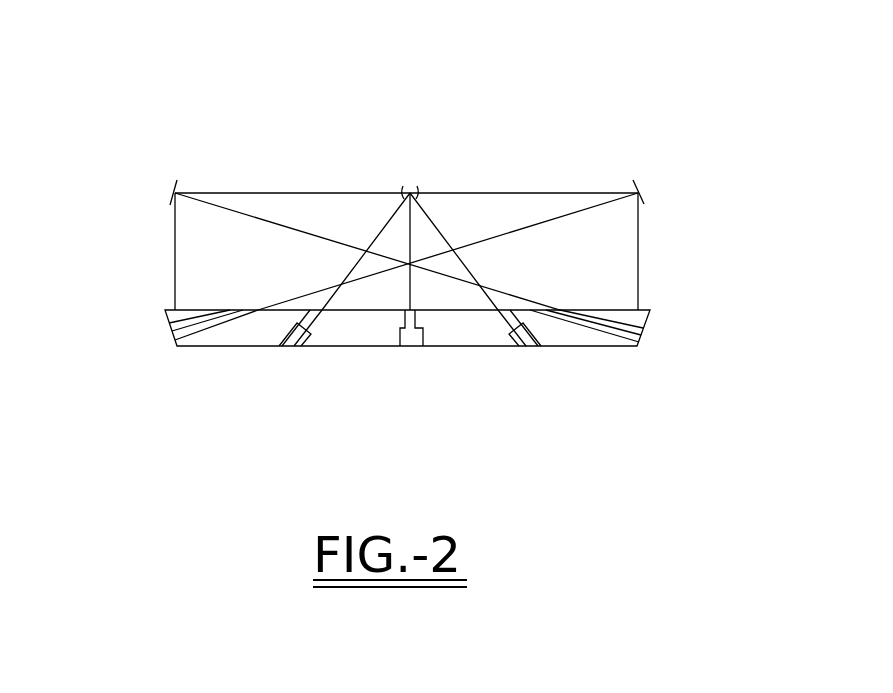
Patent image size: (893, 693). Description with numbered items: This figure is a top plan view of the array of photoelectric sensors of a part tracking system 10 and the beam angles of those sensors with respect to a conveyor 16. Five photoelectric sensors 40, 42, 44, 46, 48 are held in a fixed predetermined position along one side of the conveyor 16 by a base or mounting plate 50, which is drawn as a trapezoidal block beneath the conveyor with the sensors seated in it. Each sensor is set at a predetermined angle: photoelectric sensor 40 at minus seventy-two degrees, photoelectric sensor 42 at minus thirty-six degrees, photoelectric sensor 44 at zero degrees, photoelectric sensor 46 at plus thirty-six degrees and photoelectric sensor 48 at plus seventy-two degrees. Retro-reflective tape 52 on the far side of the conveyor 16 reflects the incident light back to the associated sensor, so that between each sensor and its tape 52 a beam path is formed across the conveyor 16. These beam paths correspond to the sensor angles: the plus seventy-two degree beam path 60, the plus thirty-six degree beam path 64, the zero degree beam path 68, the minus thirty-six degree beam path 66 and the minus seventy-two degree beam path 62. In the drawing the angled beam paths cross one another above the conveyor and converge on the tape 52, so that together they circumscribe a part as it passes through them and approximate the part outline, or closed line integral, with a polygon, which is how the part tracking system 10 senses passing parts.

The part tracking system 10 is at (584, 132).
The conveyor 16 is at (632, 263).
The photoelectric sensor 40 is at (203, 333).
The photoelectric sensor 42 is at (301, 332).
The photoelectric sensor 44 is at (417, 341).
The photoelectric sensor 46 is at (523, 340).
The photoelectric sensor 48 is at (622, 340).
The base or mounting plate 50 is at (341, 333).
The retro-reflective tape 52 is at (175, 193).
The beam path 60 is at (517, 298).
The beam path 62 is at (307, 295).
The beam path 64 is at (432, 219).
The beam path 66 is at (392, 218).
The beam path 68 is at (408, 292).